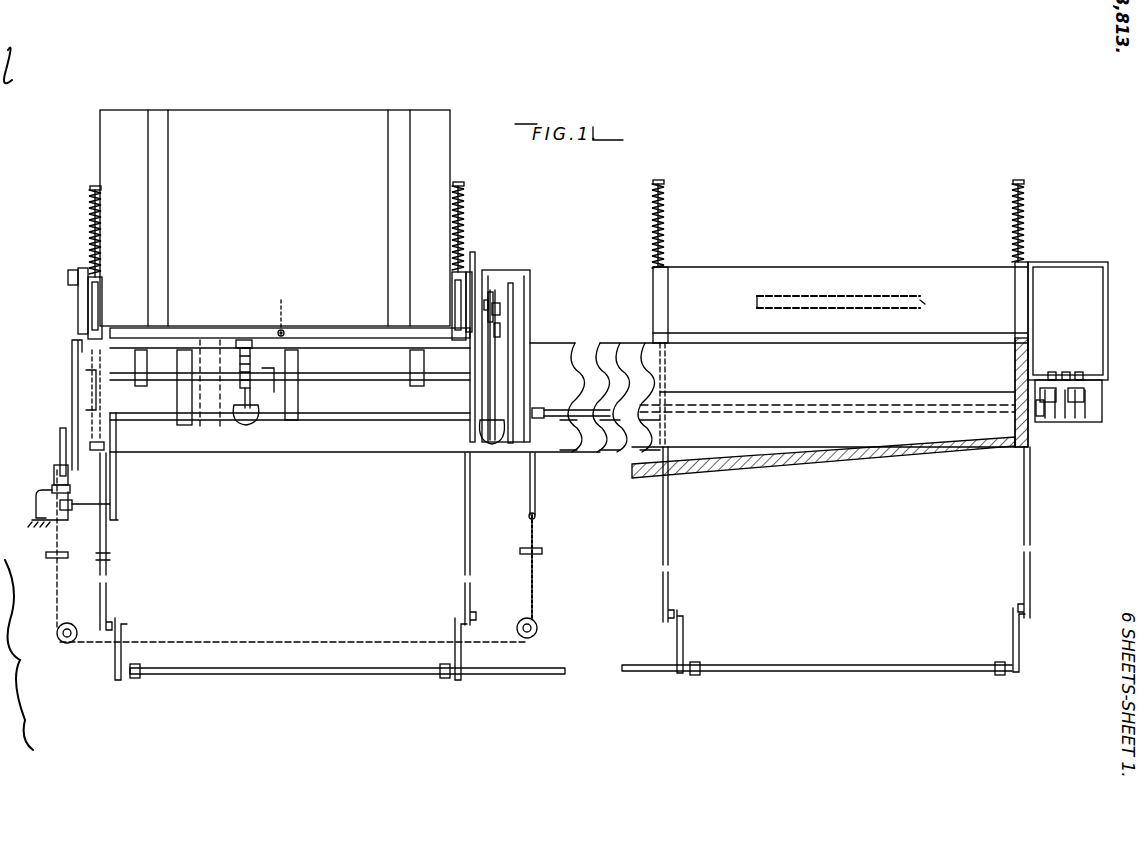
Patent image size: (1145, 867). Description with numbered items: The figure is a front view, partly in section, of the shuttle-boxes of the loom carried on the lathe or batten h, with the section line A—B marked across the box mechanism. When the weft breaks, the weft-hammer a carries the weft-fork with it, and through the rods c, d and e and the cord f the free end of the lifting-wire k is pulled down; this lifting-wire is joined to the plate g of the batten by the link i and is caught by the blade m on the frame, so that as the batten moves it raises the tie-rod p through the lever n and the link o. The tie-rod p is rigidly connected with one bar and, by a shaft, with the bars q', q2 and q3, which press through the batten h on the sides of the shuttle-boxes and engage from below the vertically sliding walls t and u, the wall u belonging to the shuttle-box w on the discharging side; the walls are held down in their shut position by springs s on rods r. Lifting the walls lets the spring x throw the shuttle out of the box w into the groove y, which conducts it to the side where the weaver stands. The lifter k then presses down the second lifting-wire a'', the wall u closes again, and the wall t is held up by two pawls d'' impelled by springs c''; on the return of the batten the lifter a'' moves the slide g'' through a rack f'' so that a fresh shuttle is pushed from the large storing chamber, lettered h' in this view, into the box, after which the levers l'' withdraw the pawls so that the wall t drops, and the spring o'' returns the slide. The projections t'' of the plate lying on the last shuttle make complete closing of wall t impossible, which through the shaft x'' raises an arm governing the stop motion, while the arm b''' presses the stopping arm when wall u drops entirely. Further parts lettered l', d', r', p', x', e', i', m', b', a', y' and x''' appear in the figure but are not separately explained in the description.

The hopper h' is at (275, 218).
The projections t'' is at (279, 218).
The slide g'' is at (290, 325).
The section line point A is at (279, 308).
The rack f'' is at (251, 324).
The rods r is at (552, 171).
The springs s is at (90, 238).
The sliding wall t is at (277, 299).
The bracket l' is at (72, 301).
The pawls d'' is at (111, 306).
The plate d' is at (447, 305).
The levers l'' is at (452, 302).
The rod r' is at (483, 342).
The pawl p' is at (499, 285).
The spring o'' is at (509, 345).
The rod c is at (501, 320).
The rod d is at (529, 363).
The weft-hammer a is at (494, 367).
The shaft x' is at (571, 402).
The lathe or batten h is at (562, 383).
The plate g is at (290, 385).
The section line point B is at (211, 385).
The screw e' is at (256, 365).
The link i' is at (285, 383).
The weight m' is at (258, 416).
The link i is at (65, 405).
The lever n is at (74, 392).
The link o is at (102, 400).
The lever b' is at (57, 445).
The pipe a' is at (74, 466).
The lifting-wire k is at (54, 478).
The blade m is at (61, 505).
The tie-rod p is at (111, 541).
The cord f is at (289, 556).
The bar q' is at (479, 539).
The rod e is at (541, 486).
The sliding wall u is at (930, 270).
The shuttle-box w is at (848, 274).
The spring x is at (934, 310).
The shaft x'' is at (827, 395).
The arm b''' is at (1077, 354).
The second lifting-wire a'' is at (1071, 412).
The pinion y' is at (1046, 376).
The springs c'' is at (1077, 377).
The pin x''' is at (1046, 422).
The groove y is at (823, 462).
The bar q2 is at (668, 516).
The bar q3 is at (1030, 492).